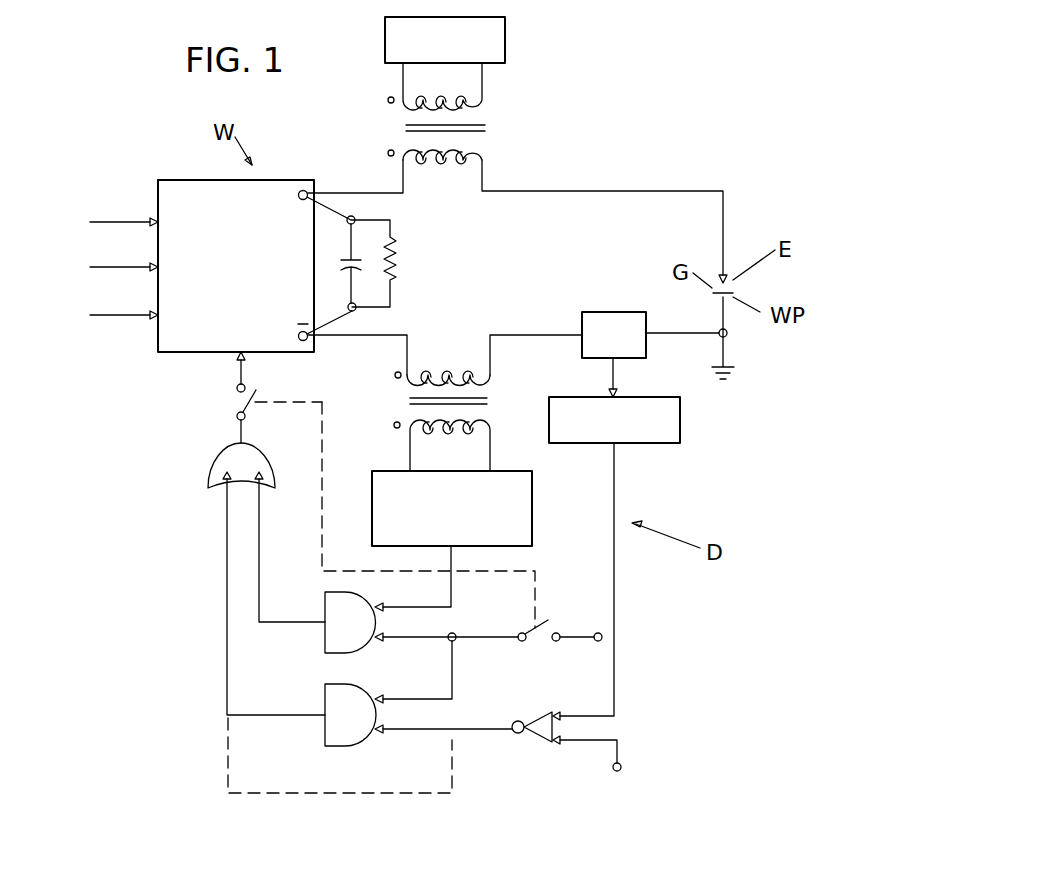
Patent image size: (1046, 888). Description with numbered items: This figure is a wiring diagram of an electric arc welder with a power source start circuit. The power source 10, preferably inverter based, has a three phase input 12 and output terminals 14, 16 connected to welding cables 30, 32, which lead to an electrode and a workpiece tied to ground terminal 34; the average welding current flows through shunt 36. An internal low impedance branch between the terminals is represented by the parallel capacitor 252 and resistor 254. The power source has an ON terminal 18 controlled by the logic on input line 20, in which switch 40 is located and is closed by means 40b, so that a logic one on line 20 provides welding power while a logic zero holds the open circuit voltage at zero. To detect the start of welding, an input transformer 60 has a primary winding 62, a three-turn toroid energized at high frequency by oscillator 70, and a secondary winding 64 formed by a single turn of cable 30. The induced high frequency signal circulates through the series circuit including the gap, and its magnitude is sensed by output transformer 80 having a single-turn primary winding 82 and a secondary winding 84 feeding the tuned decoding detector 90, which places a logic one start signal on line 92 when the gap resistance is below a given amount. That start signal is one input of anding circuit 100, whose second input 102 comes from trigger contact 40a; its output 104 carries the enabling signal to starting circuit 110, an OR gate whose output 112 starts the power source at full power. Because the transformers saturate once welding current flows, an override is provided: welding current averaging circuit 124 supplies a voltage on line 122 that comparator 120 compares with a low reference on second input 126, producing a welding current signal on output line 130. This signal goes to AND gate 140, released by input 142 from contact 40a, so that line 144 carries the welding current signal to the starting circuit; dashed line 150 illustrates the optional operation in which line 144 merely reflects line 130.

The power source 10 is at (180, 176).
The three phase input 12 is at (113, 213).
The output terminal 14 is at (306, 190).
The output terminal 16 is at (308, 340).
The ON terminal 18 is at (228, 354).
The input line 20 is at (236, 374).
The welding cable 30 is at (648, 190).
The welding cable 32 is at (543, 333).
The ground terminal 34 is at (740, 370).
The shunt 36 is at (623, 310).
The switch 40 is at (232, 407).
The contact 40a is at (560, 624).
The means 40b is at (325, 422).
The input transformer 60 is at (503, 119).
The primary winding 62 is at (490, 82).
The secondary winding 64 is at (490, 152).
The oscillator 70 is at (505, 32).
The output transformer 80 is at (509, 387).
The primary winding 82 is at (493, 375).
The secondary winding 84 is at (498, 418).
The decoding detector 90 is at (534, 510).
The start signal line 92 is at (401, 607).
The anding circuit 100 is at (334, 647).
The second input 102 is at (390, 640).
The output 104 is at (256, 560).
The starting circuit 110 is at (208, 476).
The output 112 is at (240, 430).
The comparator 120 is at (543, 745).
The input line 122 is at (617, 690).
The welding current averaging circuit 124 is at (665, 443).
The second input 126 is at (585, 744).
The output line 130 is at (412, 732).
The AND gate 140 is at (337, 745).
The input 142 is at (400, 700).
The line 144 is at (226, 658).
The dashed line 150 is at (228, 755).
The capacitor 252 is at (362, 268).
The resistor 254 is at (393, 247).